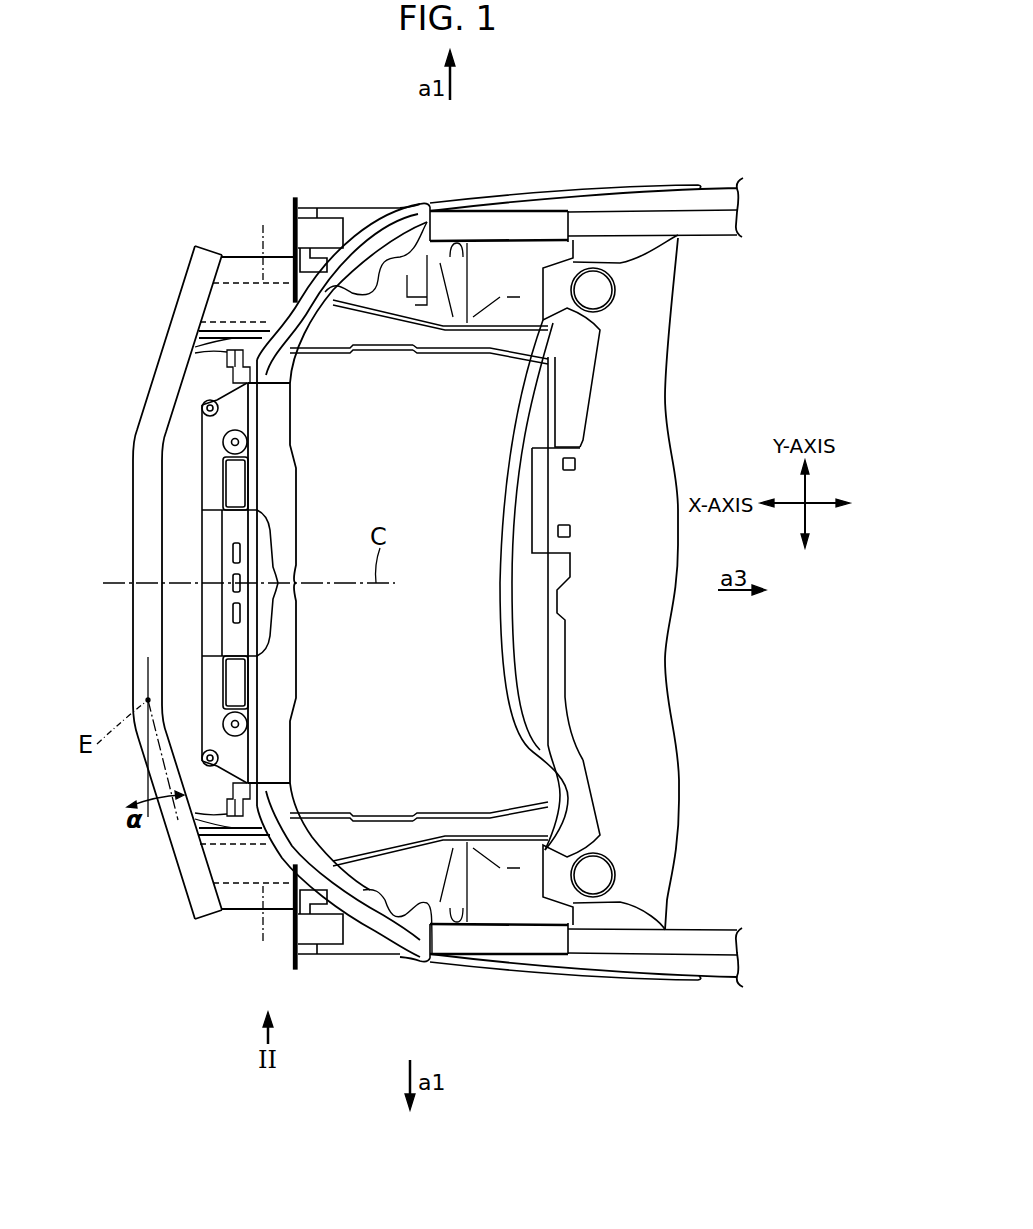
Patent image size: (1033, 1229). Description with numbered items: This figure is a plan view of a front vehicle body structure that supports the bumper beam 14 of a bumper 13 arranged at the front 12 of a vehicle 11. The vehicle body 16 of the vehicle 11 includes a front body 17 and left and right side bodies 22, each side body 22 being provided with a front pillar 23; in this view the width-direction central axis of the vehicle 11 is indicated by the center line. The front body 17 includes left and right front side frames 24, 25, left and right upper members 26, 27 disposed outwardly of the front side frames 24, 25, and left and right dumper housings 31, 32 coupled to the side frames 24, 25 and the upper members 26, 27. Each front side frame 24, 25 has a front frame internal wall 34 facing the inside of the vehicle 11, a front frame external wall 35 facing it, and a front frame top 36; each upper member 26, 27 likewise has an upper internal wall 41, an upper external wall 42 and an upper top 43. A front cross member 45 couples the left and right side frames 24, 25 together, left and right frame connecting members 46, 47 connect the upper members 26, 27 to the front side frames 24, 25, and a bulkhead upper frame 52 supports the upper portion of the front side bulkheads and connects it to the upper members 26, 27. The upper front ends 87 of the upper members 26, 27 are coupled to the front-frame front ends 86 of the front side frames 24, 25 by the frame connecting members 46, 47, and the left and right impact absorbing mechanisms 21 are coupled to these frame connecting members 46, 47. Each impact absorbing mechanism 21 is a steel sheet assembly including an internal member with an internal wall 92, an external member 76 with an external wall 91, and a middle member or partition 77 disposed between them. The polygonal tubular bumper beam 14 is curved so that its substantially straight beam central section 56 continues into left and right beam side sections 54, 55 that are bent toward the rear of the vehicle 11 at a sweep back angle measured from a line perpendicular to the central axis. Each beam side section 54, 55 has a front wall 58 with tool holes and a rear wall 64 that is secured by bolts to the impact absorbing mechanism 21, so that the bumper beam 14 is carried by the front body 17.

The vehicle 11 is at (601, 567).
The front 12 is at (107, 482).
The bumper 13 is at (148, 547).
The bumper beam 14 is at (178, 327).
The vehicle body 16 is at (717, 348).
The front body 17 is at (423, 190).
The impact absorbing mechanism 21 is at (251, 243).
The side body 22 is at (727, 172).
The front pillar 23 is at (720, 228).
The left front side frame 24 is at (418, 801).
The right front side frame 25 is at (440, 378).
The left upper member 26 is at (482, 974).
The right upper member 27 is at (500, 211).
The left dumper housing 31 is at (563, 906).
The right dumper housing 32 is at (563, 263).
The front frame internal wall 34 is at (362, 355).
The front frame external wall 35 is at (373, 307).
The front frame top 36 is at (378, 337).
The upper internal wall 41 is at (463, 245).
The upper external wall 42 is at (530, 208).
The upper top 43 is at (483, 208).
The front cross member 45 is at (200, 500).
The left frame connecting member 46 is at (295, 945).
The right frame connecting member 47 is at (295, 250).
The bulkhead upper frame 52 is at (292, 665).
The left beam side section 54 is at (172, 838).
The right beam side section 55 is at (195, 341).
The beam central section 56 is at (140, 623).
The front wall 58 is at (132, 657).
The rear wall 64 is at (166, 690).
The external member 76 is at (233, 257).
The middle member 77 is at (268, 585).
The front-frame front end 86 is at (311, 337).
The upper front end 87 is at (317, 220).
The external wall 91 is at (190, 945).
The internal wall 92 is at (222, 352).